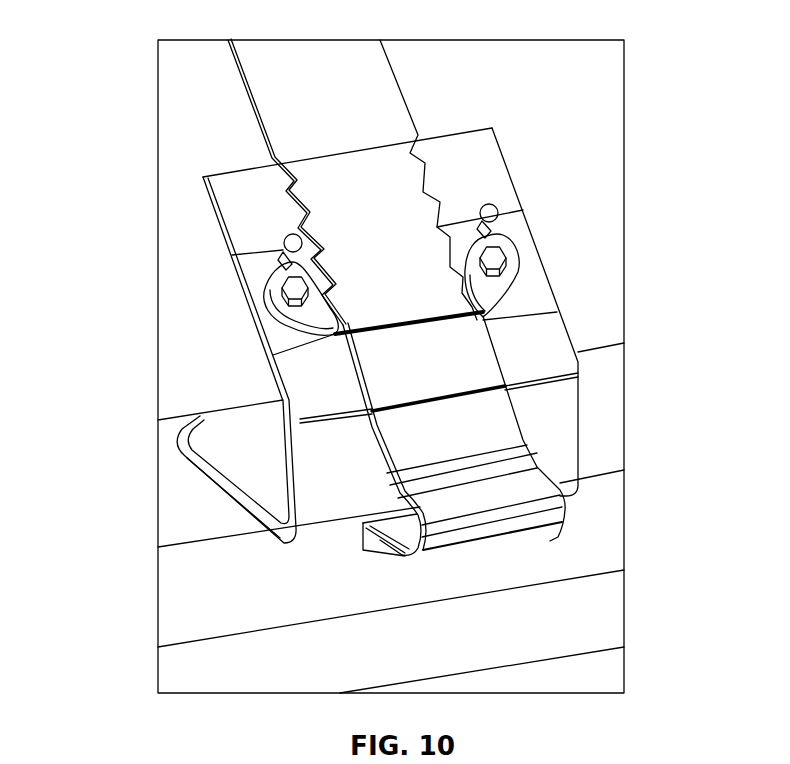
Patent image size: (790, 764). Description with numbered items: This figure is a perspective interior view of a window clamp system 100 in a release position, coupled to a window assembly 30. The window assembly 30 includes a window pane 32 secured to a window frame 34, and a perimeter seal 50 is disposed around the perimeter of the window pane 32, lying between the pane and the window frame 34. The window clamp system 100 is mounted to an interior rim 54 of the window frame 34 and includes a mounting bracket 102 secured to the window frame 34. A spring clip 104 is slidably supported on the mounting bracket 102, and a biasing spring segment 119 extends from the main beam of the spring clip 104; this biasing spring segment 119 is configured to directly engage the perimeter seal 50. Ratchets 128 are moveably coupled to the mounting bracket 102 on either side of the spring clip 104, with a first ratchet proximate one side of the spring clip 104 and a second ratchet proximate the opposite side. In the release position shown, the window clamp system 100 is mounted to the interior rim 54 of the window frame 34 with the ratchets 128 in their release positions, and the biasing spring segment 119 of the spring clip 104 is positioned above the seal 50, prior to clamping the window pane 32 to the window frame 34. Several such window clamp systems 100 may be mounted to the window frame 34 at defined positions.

The window assembly 30 is at (118, 604).
The window pane 32 is at (600, 680).
The window frame 34 is at (610, 445).
The perimeter seal 50 is at (213, 668).
The interior rim 54 is at (175, 503).
The window clamp system 100 is at (585, 126).
The mounting bracket 102 is at (228, 448).
The spring clip 104 is at (337, 73).
The biasing spring segment 119 is at (548, 530).
The ratchet 128 is at (262, 303).